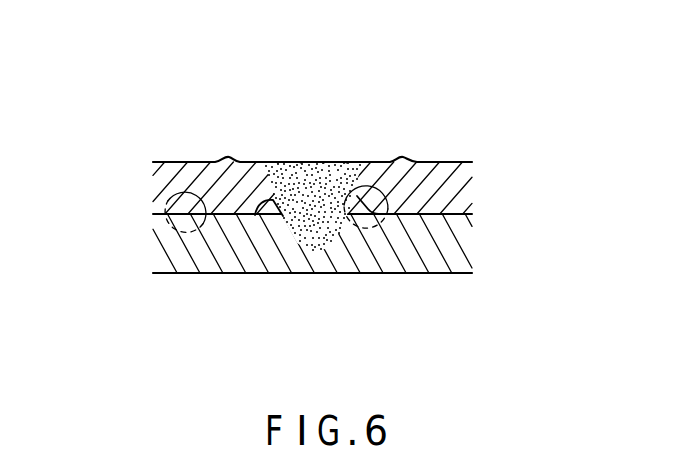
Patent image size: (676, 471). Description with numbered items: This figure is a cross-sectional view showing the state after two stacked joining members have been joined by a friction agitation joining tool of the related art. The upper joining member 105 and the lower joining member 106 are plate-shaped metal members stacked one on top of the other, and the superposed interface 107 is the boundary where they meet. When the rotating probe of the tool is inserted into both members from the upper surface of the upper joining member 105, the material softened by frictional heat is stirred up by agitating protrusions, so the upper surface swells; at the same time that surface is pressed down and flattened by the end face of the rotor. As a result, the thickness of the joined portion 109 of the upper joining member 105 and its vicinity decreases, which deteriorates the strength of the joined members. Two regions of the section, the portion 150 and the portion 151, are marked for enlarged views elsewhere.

The upper joining member 105 is at (455, 178).
The lower joining member 106 is at (457, 237).
The superposed interface 107 is at (428, 215).
The joined portion 109 is at (325, 180).
The portion 150 is at (163, 213).
The portion 151 is at (372, 229).